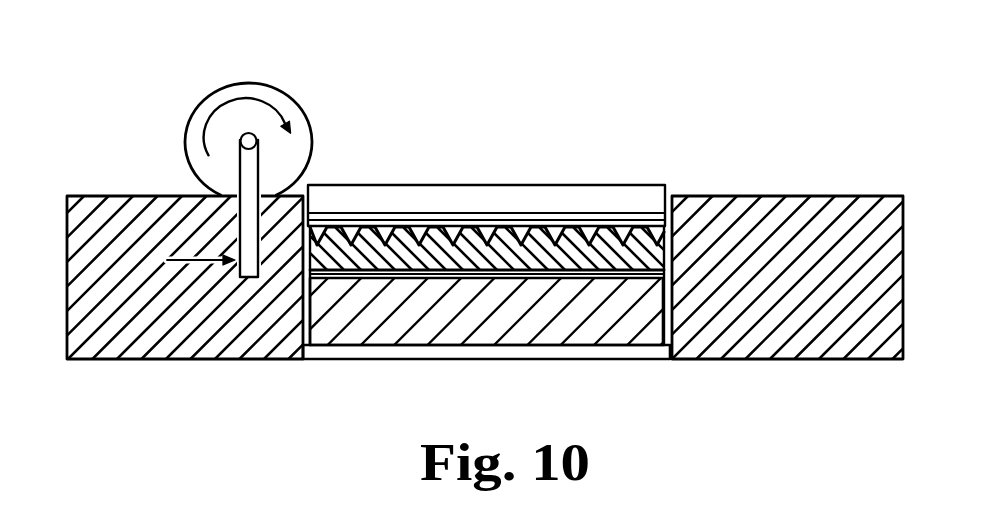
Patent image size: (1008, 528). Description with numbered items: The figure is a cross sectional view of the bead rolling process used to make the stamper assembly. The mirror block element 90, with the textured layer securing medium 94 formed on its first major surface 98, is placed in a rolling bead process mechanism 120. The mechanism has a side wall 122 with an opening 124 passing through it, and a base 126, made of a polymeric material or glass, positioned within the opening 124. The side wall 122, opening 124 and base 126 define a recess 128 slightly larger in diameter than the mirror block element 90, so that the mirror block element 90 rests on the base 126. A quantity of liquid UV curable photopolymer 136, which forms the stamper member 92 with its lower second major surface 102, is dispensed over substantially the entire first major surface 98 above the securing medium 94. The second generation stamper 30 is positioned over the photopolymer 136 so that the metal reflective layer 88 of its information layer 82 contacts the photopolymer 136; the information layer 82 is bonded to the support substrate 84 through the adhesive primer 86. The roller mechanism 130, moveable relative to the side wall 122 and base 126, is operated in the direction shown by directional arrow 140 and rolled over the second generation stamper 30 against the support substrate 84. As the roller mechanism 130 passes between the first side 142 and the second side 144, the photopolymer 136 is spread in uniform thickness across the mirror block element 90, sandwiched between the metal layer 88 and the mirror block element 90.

The second generation stamper 30 is at (494, 236).
The information layer 82 is at (420, 240).
The support substrate 84 is at (553, 196).
The adhesive primer 86 is at (452, 247).
The metal layer 88 is at (418, 240).
The mirror block element 90 is at (346, 335).
The stamper member 92 is at (372, 242).
The securing medium 94 is at (380, 279).
The first major surface 98 is at (597, 266).
The second major surface 102 is at (530, 275).
The rolling bead process mechanism 120 is at (504, 271).
The side wall 122 is at (101, 341).
The opening 124 is at (640, 243).
The base 126 is at (646, 353).
The recess 128 is at (486, 157).
The roller mechanism 130 is at (200, 81).
The UV curable photopolymer 136 is at (487, 193).
The directional arrow 140 is at (190, 258).
The first side 142 is at (128, 195).
The second side 144 is at (735, 196).